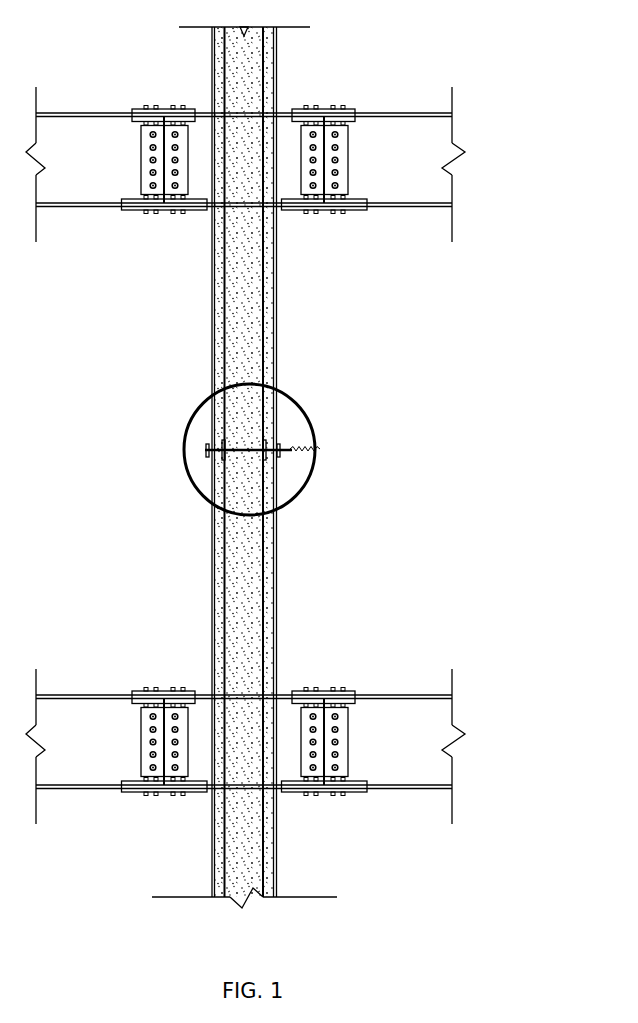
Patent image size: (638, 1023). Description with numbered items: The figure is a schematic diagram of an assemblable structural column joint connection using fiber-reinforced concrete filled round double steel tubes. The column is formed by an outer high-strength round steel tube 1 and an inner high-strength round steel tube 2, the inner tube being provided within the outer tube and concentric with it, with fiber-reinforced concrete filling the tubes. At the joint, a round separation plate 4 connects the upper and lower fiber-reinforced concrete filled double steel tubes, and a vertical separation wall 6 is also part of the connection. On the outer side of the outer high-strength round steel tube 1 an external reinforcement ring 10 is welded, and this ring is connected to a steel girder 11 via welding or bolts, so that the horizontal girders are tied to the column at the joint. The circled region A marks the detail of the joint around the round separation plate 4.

The outer high-strength round steel tube 1 is at (273, 320).
The inner high-strength round steel tube 2 is at (270, 367).
The round separation plate 4 is at (320, 448).
The vertical separation wall 6 is at (208, 447).
The external reinforcement ring 10 is at (250, 203).
The steel girder 11 is at (82, 187).
The detail region A is at (275, 483).